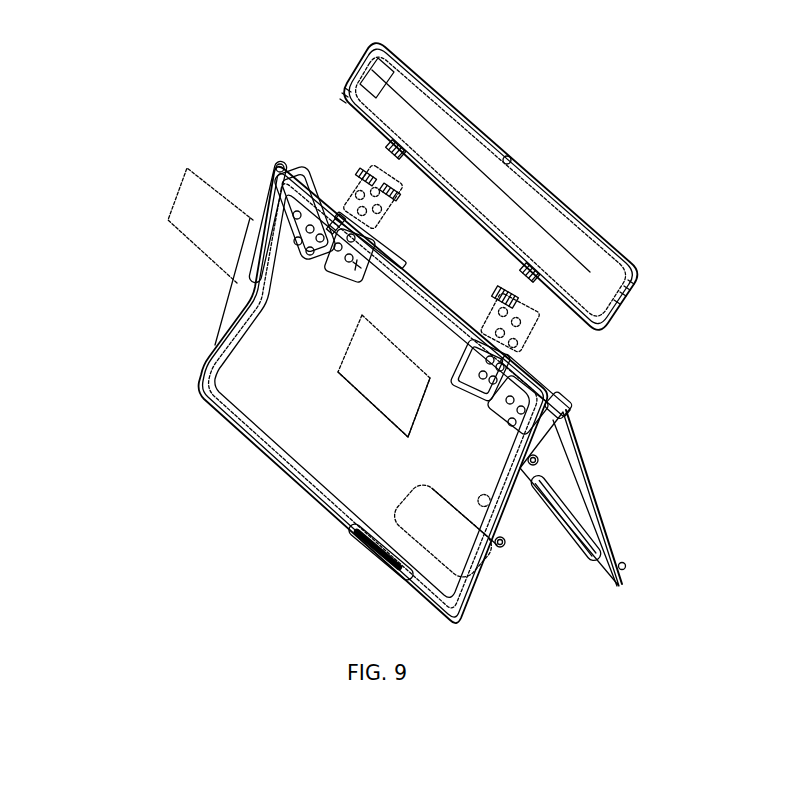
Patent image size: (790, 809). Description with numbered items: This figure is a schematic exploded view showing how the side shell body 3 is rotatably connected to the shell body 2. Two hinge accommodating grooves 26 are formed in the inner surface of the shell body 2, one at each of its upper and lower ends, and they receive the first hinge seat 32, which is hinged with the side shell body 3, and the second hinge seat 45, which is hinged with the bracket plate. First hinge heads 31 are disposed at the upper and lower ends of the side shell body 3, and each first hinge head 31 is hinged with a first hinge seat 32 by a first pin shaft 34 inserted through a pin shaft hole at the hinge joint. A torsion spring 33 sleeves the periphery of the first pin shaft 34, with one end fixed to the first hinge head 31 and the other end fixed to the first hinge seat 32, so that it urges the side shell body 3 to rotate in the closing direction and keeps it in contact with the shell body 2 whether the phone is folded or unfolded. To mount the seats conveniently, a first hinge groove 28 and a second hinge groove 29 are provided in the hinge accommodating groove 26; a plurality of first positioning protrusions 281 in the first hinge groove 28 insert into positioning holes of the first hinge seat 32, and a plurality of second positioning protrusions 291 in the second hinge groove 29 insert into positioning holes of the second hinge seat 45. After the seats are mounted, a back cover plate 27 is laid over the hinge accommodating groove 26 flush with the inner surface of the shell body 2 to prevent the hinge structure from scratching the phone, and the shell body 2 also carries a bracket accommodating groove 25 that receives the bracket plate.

The shell body 2 is at (267, 470).
The side shell body 3 is at (545, 222).
The bracket accommodating groove 25 is at (253, 388).
The hinge accommodating groove 26 is at (330, 283).
The back cover plate 27 is at (207, 230).
The first hinge groove 28 is at (333, 222).
The first positioning protrusion 281 is at (392, 260).
The second hinge groove 29 is at (258, 222).
The second positioning protrusion 291 is at (277, 163).
The first hinge head 31 is at (400, 147).
The first hinge seat 32 is at (392, 216).
The torsion spring 33 is at (375, 165).
The first pin shaft 34 is at (392, 181).
The second hinge seat 45 is at (250, 220).